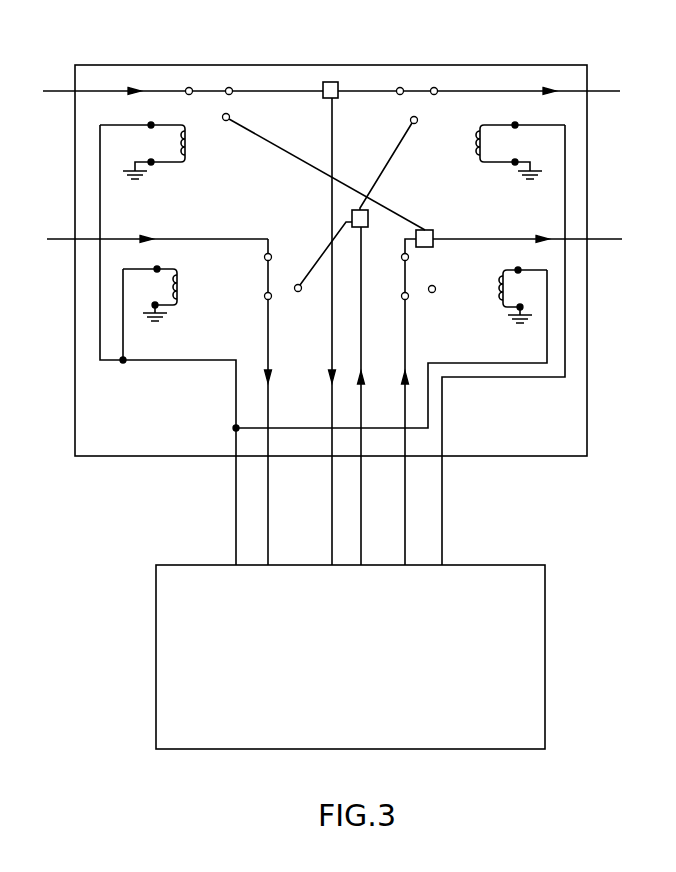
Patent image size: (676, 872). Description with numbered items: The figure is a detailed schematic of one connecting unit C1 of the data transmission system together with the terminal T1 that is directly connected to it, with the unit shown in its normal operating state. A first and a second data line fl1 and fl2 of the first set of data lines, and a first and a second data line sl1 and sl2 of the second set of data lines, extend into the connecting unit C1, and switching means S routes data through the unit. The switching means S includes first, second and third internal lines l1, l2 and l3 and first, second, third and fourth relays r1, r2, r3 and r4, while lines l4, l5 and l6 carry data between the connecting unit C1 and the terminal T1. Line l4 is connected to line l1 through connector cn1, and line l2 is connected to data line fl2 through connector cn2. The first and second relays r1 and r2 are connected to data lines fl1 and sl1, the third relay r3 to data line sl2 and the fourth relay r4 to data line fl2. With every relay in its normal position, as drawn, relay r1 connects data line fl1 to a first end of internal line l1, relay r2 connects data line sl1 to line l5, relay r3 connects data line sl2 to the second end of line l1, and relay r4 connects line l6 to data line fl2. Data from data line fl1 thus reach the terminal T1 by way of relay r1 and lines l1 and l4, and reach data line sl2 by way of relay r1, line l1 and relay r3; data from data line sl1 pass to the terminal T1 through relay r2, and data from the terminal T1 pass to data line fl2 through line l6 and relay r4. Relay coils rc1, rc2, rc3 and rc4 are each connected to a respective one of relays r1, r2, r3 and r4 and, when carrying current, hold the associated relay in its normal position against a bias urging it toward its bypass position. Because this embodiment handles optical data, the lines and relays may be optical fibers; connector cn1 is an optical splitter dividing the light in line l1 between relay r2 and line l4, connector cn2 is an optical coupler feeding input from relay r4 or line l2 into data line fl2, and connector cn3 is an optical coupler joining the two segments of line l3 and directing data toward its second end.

The connecting unit C1 is at (331, 260).
The switching means S is at (332, 345).
The terminal T1 is at (350, 657).
The first internal line l1 is at (262, 86).
The second internal line l2 is at (294, 154).
The third internal line l3 is at (398, 148).
The line l4 is at (331, 314).
The line l5 is at (270, 488).
The line l6 is at (405, 505).
The first data line of the first set fl1 is at (55, 92).
The second data line of the first set fl2 is at (613, 244).
The first data line of the second set sl1 is at (60, 240).
The second data line of the second set sl2 is at (610, 94).
The first relay r1 is at (207, 86).
The second relay r2 is at (266, 280).
The third relay r3 is at (418, 88).
The fourth relay r4 is at (406, 276).
The relay coil rc1 is at (189, 143).
The relay coil rc2 is at (181, 295).
The relay coil rc3 is at (478, 140).
The relay coil rc4 is at (501, 295).
The connector cn1 is at (340, 98).
The connector cn2 is at (433, 232).
The connector cn3 is at (352, 215).